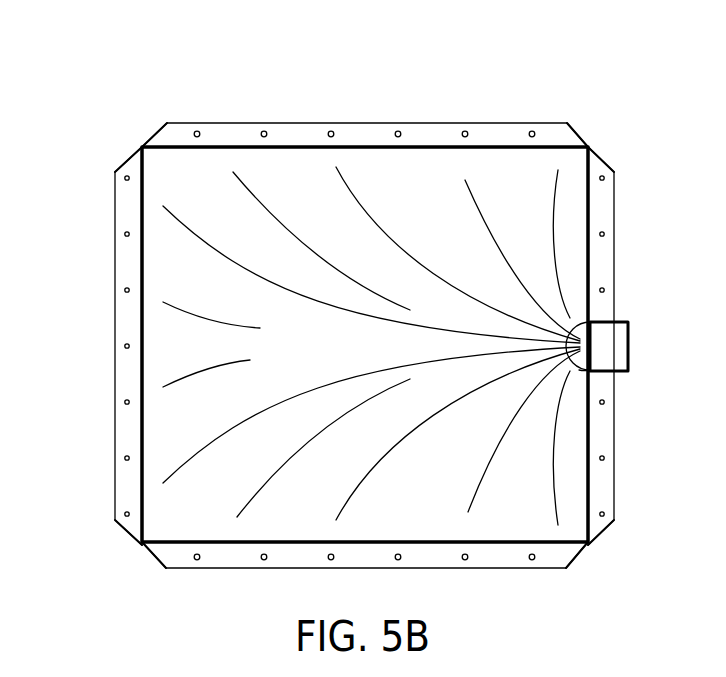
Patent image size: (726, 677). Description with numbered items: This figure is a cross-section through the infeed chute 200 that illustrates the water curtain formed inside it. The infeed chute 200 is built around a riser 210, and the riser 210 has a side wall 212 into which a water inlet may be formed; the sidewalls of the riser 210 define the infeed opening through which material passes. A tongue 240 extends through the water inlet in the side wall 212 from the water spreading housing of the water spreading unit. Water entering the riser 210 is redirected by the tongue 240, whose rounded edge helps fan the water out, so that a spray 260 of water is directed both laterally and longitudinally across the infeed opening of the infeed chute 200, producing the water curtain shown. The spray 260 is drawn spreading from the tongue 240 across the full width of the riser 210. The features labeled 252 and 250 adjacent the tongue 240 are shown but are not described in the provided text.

The infeed chute 200 is at (375, 294).
The riser 210 is at (395, 297).
The side wall 212 is at (592, 212).
The spray of water 260 is at (163, 180).
The inlet manifold arc 252 is at (572, 322).
The tongue 240 is at (630, 342).
The channel 250 is at (580, 370).